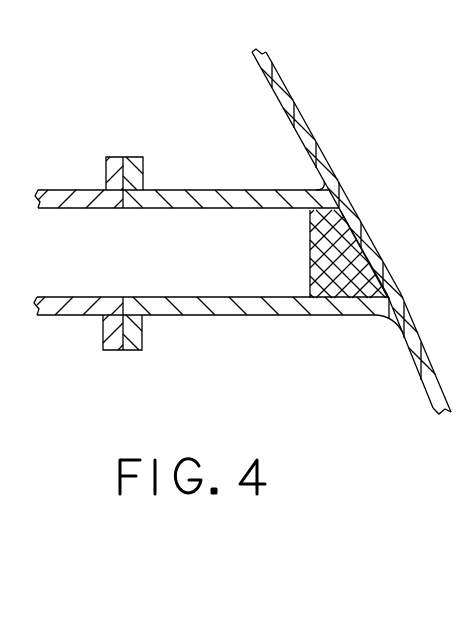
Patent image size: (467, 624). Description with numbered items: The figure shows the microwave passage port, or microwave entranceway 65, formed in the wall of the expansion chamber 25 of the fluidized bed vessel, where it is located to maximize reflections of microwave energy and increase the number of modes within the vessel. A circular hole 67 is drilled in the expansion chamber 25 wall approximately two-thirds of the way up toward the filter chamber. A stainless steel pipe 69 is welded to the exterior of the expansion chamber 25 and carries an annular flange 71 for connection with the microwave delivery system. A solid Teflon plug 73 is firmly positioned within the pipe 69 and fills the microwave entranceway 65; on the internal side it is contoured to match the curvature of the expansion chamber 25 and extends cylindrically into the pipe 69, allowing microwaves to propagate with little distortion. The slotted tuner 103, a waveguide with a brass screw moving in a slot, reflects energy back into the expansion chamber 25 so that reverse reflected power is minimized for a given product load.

The expansion chamber 25 is at (428, 352).
The microwave entranceway 65 is at (314, 190).
The circular hole 67 is at (378, 233).
The stainless steel pipe 69 is at (223, 316).
The annular flange 71 is at (131, 154).
The Teflon plug 73 is at (387, 278).
The slotted tuner 103 is at (58, 316).